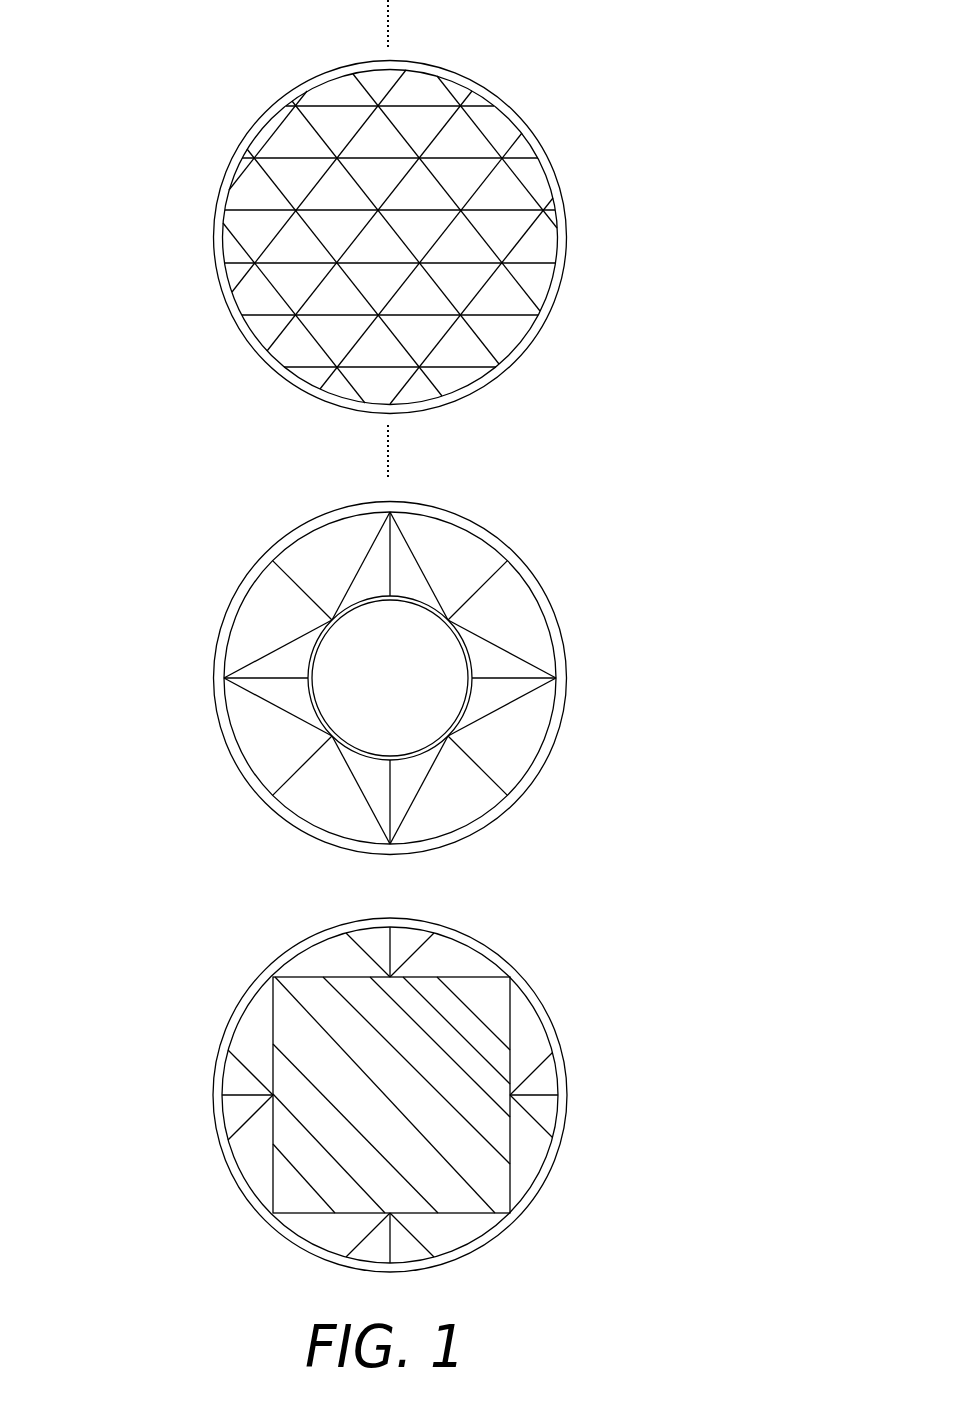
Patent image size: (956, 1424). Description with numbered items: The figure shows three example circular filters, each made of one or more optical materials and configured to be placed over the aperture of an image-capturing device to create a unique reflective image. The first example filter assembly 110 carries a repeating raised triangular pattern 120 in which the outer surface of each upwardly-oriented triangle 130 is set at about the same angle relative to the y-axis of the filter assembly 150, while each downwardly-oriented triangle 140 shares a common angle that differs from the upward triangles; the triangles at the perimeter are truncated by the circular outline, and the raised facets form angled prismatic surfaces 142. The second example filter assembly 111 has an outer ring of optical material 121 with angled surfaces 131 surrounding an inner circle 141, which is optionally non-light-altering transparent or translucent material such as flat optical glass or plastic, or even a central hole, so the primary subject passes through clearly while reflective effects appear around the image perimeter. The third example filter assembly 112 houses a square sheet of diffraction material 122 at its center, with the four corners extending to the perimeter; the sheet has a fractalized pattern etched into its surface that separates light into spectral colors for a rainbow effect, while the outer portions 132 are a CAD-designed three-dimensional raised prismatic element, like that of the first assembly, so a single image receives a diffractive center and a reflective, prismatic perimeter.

The first example filter assembly 110 is at (603, 208).
The second example filter assembly 111 is at (600, 670).
The third example filter assembly 112 is at (615, 1095).
The repeating raised triangular pattern 120 is at (234, 263).
The outer ring of optical material 121 is at (258, 733).
The square sheet of diffraction material 122 is at (311, 1037).
The upwardly-oriented triangle 130 is at (420, 292).
The angled surfaces 131 is at (362, 772).
The outer portions 132 is at (445, 1240).
The downwardly-oriented triangle 140 is at (385, 188).
The inner circle 141 is at (350, 644).
The angled prismatic surfaces 142 is at (225, 1064).
The y-axis of the filter assembly 150 is at (432, 12).